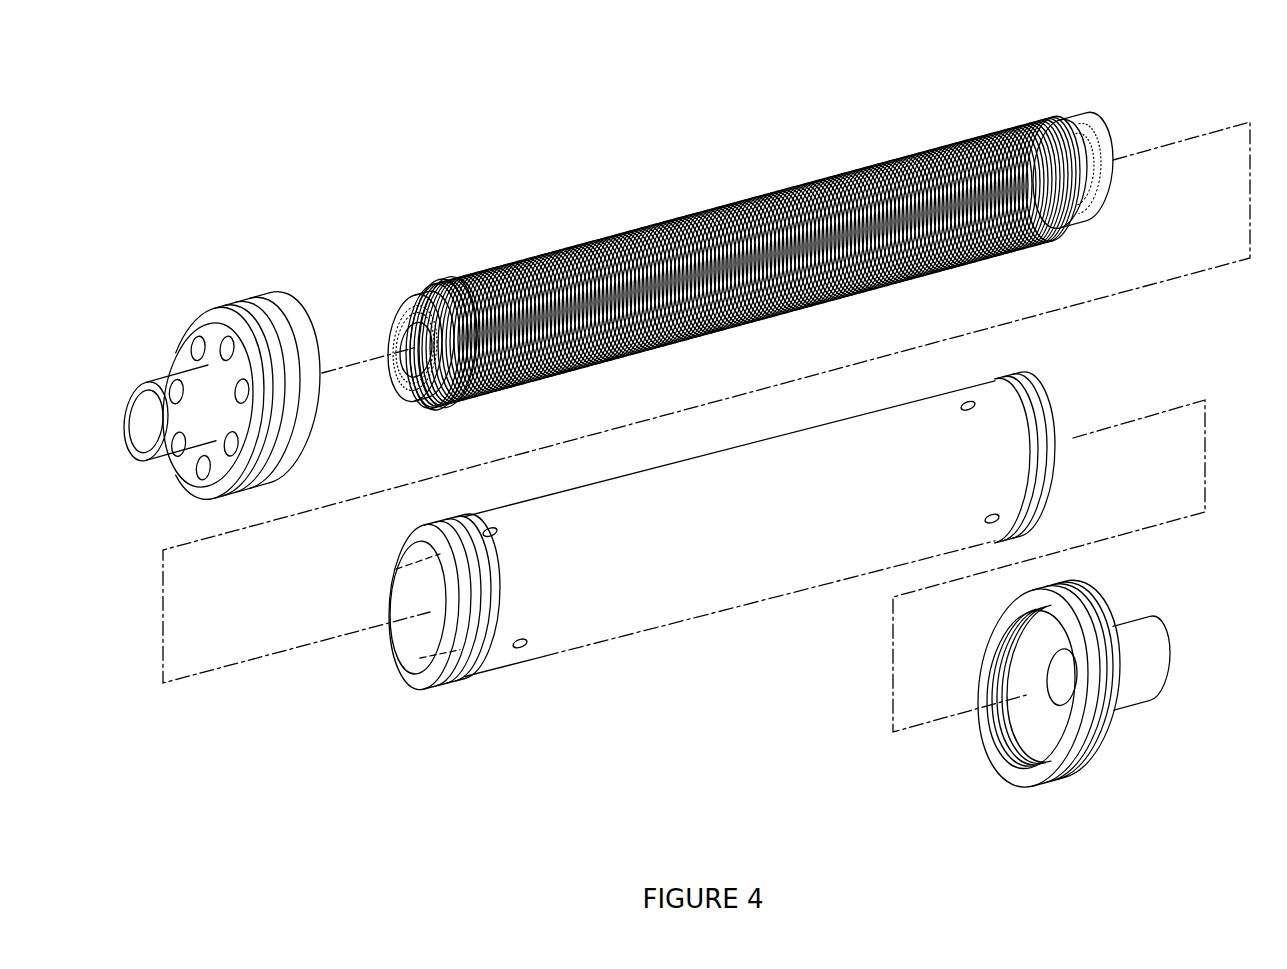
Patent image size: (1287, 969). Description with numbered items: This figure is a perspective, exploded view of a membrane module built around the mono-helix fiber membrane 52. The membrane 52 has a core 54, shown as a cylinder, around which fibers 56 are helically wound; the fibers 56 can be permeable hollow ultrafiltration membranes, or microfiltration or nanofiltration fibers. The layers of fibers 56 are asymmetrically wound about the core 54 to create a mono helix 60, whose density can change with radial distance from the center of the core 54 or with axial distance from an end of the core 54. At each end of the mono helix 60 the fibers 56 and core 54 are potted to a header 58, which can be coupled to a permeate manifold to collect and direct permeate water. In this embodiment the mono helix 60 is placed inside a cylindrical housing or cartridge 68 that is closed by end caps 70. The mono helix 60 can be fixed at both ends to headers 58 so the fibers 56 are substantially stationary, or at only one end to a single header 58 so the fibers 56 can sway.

The mono-helix fiber membrane 52 is at (628, 118).
The core 54 is at (400, 330).
The fibers 56 is at (525, 285).
The header 58 is at (433, 388).
The mono helix 60 is at (823, 160).
The cylindrical housing or cartridge 68 is at (673, 602).
The end caps 70 is at (162, 386).